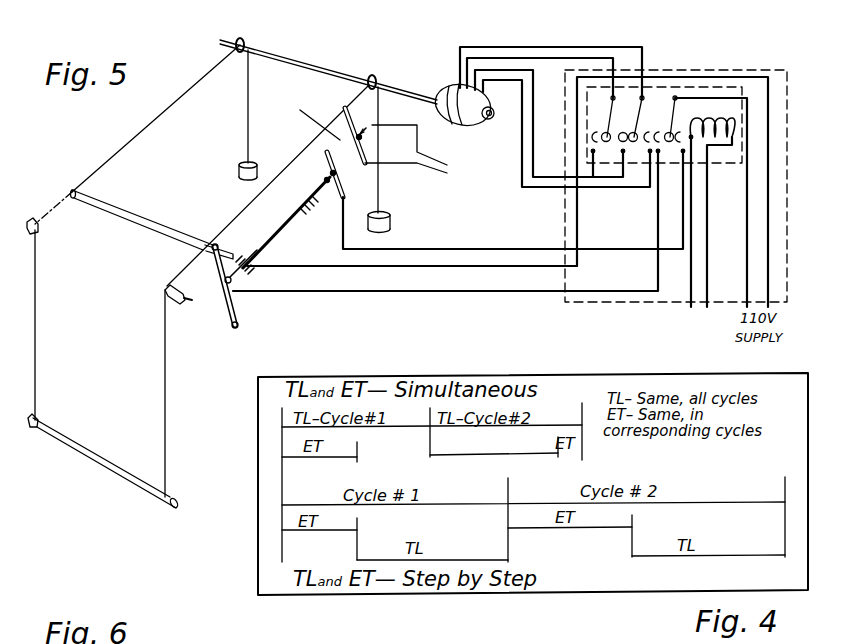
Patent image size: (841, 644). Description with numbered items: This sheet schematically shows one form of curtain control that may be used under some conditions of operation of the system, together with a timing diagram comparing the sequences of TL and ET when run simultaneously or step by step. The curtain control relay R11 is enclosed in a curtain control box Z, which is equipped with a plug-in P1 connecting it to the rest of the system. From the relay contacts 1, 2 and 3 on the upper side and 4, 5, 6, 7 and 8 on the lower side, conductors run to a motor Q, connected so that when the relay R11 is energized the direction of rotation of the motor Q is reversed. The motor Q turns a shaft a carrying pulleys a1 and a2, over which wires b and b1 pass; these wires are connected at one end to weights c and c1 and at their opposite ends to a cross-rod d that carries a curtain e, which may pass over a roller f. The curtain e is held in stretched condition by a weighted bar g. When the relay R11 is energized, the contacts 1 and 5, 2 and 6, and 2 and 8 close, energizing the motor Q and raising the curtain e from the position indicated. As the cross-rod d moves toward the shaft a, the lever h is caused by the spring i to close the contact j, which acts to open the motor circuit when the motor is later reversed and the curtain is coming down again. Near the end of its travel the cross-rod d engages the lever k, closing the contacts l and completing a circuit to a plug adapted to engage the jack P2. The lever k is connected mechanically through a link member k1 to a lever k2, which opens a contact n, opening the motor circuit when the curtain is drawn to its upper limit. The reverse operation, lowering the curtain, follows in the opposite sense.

The shaft a is at (328, 72).
The pulley a1 is at (248, 42).
The pulley a2 is at (378, 78).
The wire b is at (143, 130).
The wire b1 is at (250, 199).
The weight c is at (258, 163).
The weight c1 is at (392, 225).
The cross-rod d is at (158, 229).
The curtain e is at (163, 370).
The roller f is at (173, 308).
The weighted bar g is at (172, 500).
The lever h is at (238, 307).
The spring i is at (256, 246).
The contact j is at (237, 283).
The lever k is at (352, 109).
The link member k1 is at (313, 116).
The lever k2 is at (340, 174).
The contacts l is at (374, 139).
The contact n is at (330, 187).
The plug-in P1 is at (697, 318).
The jack P2 is at (454, 173).
The motor Q is at (477, 127).
The curtain control relay R11 is at (664, 125).
The curtain control box Z is at (798, 205).
The relay contact 1 is at (604, 98).
The relay contact 2 is at (631, 98).
The relay contact 3 is at (666, 97).
The relay contact 4 is at (599, 154).
The relay contact 5 is at (617, 154).
The relay contact 6 is at (642, 154).
The relay terminal 7 is at (665, 154).
The relay contact 8 is at (677, 154).